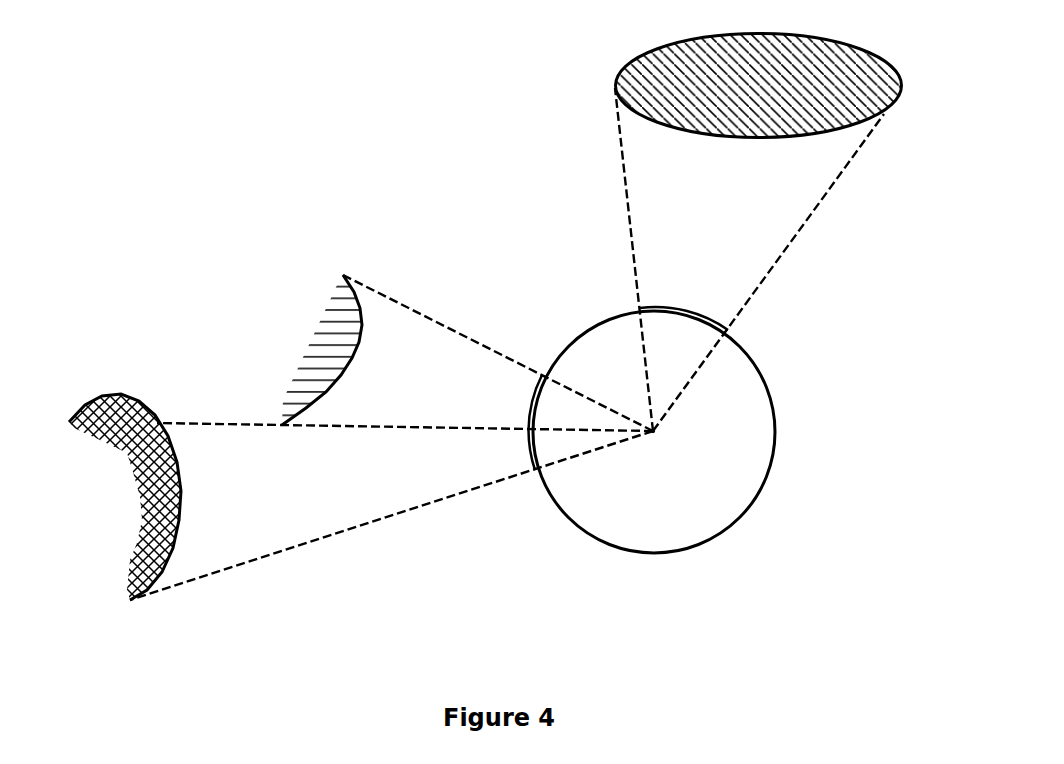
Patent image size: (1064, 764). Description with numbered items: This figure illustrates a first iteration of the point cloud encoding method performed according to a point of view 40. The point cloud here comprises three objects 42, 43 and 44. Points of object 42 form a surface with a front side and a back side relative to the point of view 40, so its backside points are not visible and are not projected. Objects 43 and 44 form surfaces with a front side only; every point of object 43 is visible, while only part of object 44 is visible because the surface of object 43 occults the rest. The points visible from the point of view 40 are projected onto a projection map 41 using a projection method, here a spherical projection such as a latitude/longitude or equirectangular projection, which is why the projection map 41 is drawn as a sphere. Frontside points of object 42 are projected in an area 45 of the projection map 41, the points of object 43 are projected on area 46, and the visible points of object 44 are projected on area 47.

The point of view 40 is at (660, 434).
The projection map 41 is at (678, 554).
The object 42 is at (622, 68).
The object 43 is at (357, 339).
The object 44 is at (138, 394).
The area of the projection map 45 is at (696, 302).
The area of projection map 46 is at (532, 402).
The area of projection map 47 is at (532, 450).